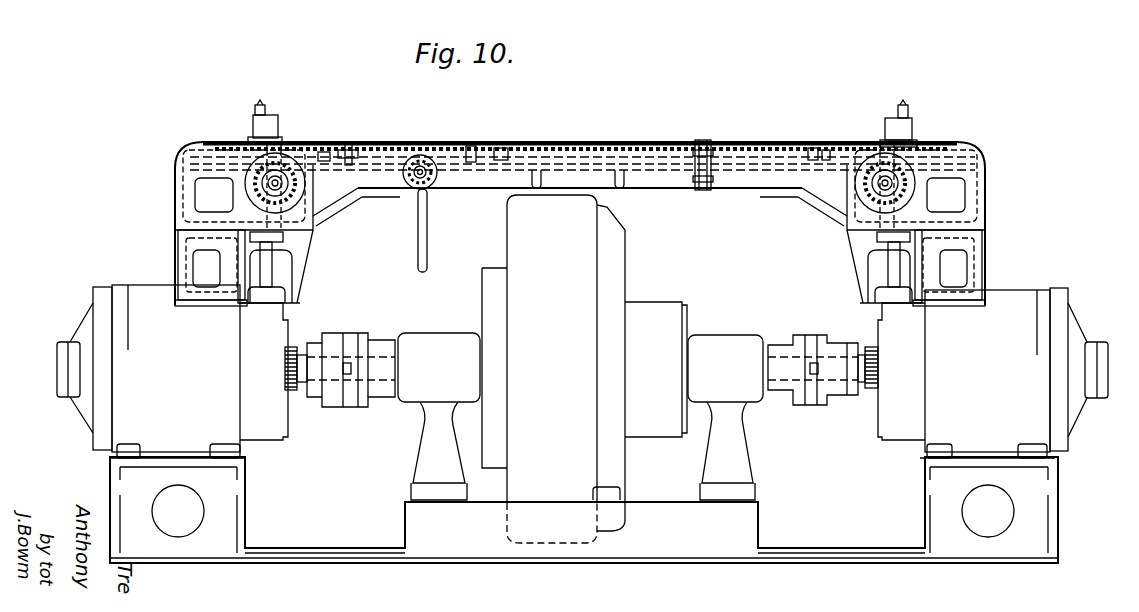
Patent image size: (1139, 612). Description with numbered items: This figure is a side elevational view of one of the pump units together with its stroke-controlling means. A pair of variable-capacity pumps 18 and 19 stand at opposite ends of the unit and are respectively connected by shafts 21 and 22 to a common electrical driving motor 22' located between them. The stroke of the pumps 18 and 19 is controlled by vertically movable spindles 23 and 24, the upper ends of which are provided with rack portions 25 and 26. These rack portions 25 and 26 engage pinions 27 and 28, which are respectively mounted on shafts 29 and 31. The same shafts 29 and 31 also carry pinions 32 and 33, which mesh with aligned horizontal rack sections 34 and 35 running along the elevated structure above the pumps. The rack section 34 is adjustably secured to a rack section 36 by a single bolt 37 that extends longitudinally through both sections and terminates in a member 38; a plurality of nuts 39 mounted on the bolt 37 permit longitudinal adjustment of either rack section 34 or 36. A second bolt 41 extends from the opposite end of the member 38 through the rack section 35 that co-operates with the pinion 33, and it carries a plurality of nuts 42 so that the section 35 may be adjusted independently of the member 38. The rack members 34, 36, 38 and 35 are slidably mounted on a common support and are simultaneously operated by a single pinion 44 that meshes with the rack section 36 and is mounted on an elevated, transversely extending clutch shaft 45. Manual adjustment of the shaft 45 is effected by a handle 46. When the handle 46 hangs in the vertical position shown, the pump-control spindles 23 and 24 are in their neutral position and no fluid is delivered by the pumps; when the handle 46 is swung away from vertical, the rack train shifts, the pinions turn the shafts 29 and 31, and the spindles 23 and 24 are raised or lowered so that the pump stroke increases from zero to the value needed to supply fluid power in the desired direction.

The variable-capacity pump 18 is at (172, 371).
The variable-capacity pump 19 is at (993, 373).
The shaft 21 is at (325, 355).
The shaft 22 is at (823, 355).
The electrical driving motor 22' is at (584, 369).
The spindle 23 is at (270, 277).
The spindle 24 is at (897, 270).
The rack portion 25 is at (272, 163).
The rack portion 26 is at (915, 152).
The pinion 27 is at (268, 180).
The pinion 28 is at (878, 196).
The shaft 29 is at (280, 197).
The shaft 31 is at (908, 183).
The pinion 32 is at (302, 193).
The pinion 33 is at (870, 188).
The rack section 34 is at (314, 156).
The rack section 35 is at (856, 152).
The rack section 36 is at (372, 148).
The bolt 37 is at (340, 152).
The member 38 is at (573, 158).
The nuts 39 is at (349, 156).
The bolt 41 is at (828, 152).
The nuts 42 is at (815, 152).
The pinion 44 is at (412, 184).
The clutch shaft 45 is at (430, 180).
The handle 46 is at (428, 245).